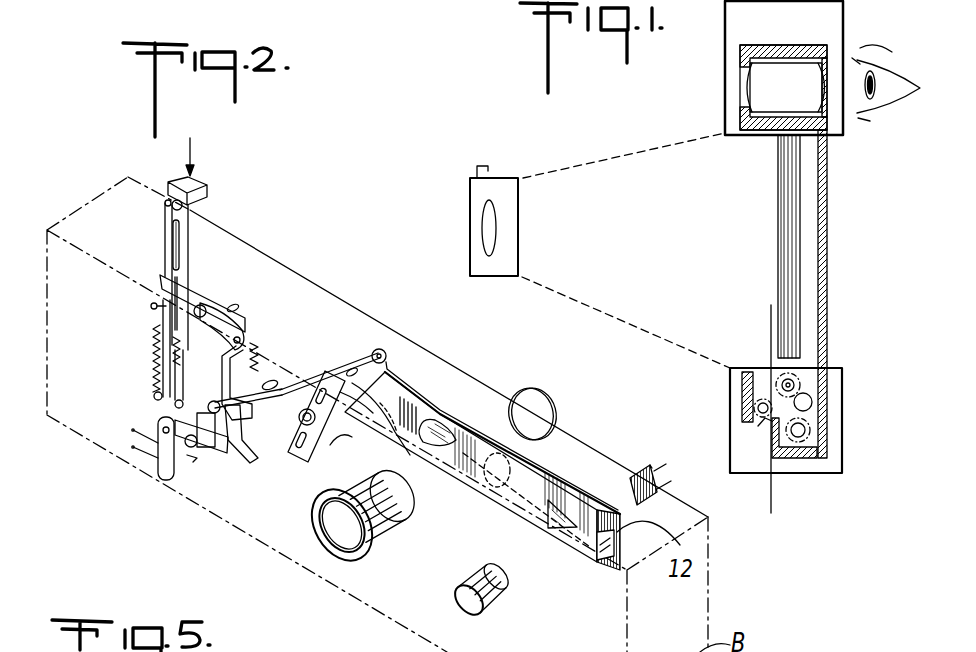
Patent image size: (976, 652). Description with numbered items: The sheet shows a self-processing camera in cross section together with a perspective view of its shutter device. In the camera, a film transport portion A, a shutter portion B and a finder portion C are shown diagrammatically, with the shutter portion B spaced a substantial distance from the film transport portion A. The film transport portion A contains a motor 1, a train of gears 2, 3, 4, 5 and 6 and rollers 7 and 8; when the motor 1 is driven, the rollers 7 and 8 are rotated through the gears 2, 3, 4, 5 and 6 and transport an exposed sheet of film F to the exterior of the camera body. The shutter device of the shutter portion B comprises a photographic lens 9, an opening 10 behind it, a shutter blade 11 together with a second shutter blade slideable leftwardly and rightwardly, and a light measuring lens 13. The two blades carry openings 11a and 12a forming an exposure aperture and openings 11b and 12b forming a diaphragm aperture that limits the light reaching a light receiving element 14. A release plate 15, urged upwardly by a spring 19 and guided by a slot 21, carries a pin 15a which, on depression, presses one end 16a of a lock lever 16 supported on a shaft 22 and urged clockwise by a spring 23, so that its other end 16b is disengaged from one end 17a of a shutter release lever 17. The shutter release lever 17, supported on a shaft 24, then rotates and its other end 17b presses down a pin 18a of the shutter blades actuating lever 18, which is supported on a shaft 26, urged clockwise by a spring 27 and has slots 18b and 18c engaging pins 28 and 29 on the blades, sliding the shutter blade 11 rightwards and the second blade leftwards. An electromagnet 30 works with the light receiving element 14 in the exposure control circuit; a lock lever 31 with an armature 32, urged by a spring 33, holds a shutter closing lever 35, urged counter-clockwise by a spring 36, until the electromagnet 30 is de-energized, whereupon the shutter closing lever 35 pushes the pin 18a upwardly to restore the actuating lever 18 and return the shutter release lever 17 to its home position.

In FIG. 1, the motor 1 is at (800, 445).
In FIG. 1, the gear 2 is at (812, 420).
In FIG. 1, the gear 3 is at (810, 400).
In FIG. 1, the gear 4 is at (798, 387).
In FIG. 1, the gear 5 is at (790, 380).
In FIG. 1, the gear 6 is at (760, 423).
In FIG. 1, the roller 7 is at (770, 400).
In FIG. 1, the roller 8 is at (745, 398).
In FIG. 2, the photographic lens 9 is at (340, 530).
In FIG. 2, the opening 10 is at (537, 400).
In FIG. 2, the shutter blade 11 is at (378, 432).
In FIG. 2, the opening 11a is at (470, 400).
In FIG. 2, the opening 11b is at (548, 508).
In FIG. 2, the opening 12a is at (473, 452).
In FIG. 2, the opening 12b is at (606, 562).
In FIG. 2, the light measuring lens 13 is at (480, 610).
In FIG. 2, the light receiving element 14 is at (640, 467).
In FIG. 2, the release plate 15 is at (200, 178).
In FIG. 2, the pin 15a is at (168, 205).
In FIG. 2, the lock lever 16 is at (225, 305).
In FIG. 2, the end of lock lever 16a is at (182, 286).
In FIG. 2, the other end of lock lever 16b is at (262, 322).
In FIG. 2, the shutter release lever 17 is at (275, 355).
In FIG. 2, the end of shutter release lever 17a is at (173, 337).
In FIG. 2, the other end of shutter release lever 17b is at (268, 362).
In FIG. 2, the shutter blades actuating lever 18 is at (405, 390).
In FIG. 2, the pin 18a is at (290, 440).
In FIG. 2, the slot 18b is at (385, 375).
In FIG. 2, the slot 18c is at (310, 465).
In FIG. 2, the spring 19 is at (150, 358).
In FIG. 2, the slot 21 is at (185, 240).
In FIG. 2, the shaft 22 is at (190, 313).
In FIG. 2, the spring 23 is at (245, 302).
In FIG. 2, the shaft 24 is at (208, 404).
In FIG. 2, the shaft 26 is at (452, 400).
In FIG. 2, the spring 27 is at (382, 347).
In FIG. 2, the pin 28 is at (386, 352).
In FIG. 2, the pin 29 is at (355, 437).
In FIG. 2, the electromagnet 30 is at (167, 470).
In FIG. 2, the lock lever 31 is at (205, 453).
In FIG. 2, the armature 32 is at (155, 443).
In FIG. 2, the spring 33 is at (195, 450).
In FIG. 2, the shutter closing lever 35 is at (253, 455).
In FIG. 2, the spring 36 is at (300, 352).
In FIG. 1, the film transport portion A is at (824, 434).
In FIG. 1, the shutter portion B is at (512, 175).
In FIG. 1, the finder portion C is at (816, 33).
In FIG. 1, the sheet of film F is at (770, 312).